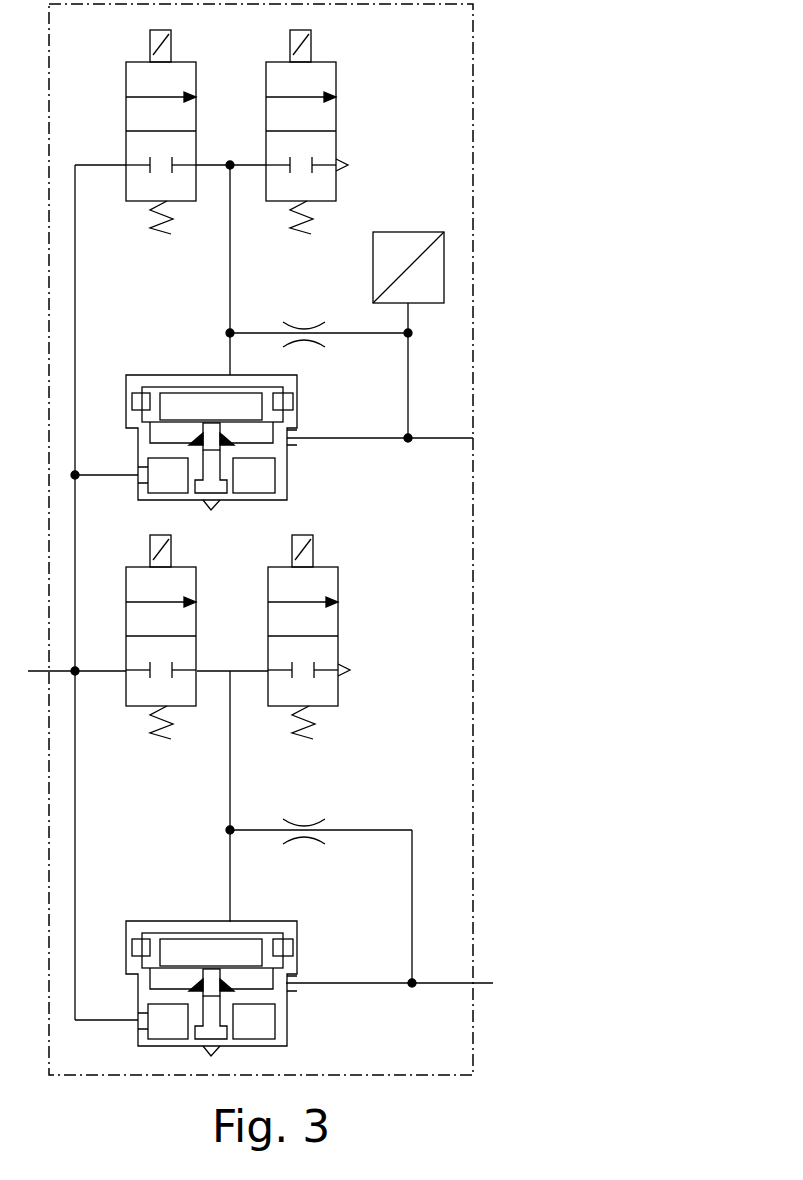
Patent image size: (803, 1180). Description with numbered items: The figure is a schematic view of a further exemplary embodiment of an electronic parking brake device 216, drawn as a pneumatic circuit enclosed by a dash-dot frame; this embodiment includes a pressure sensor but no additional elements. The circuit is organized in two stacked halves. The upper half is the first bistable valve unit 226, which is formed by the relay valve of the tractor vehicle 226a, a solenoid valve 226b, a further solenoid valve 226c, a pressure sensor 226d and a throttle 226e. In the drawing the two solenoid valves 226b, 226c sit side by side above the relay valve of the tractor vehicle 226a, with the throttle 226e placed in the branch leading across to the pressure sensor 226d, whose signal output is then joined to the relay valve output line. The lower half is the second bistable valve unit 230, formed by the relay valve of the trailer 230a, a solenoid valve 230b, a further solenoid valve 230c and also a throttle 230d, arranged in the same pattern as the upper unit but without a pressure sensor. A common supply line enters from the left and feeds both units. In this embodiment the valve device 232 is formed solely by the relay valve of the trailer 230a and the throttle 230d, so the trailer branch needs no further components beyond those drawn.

The electronic parking brake device 216 is at (534, 46).
The first bistable valve unit 226 is at (534, 152).
The second bistable valve unit 230 is at (534, 259).
The valve device 232 is at (534, 364).
The relay valve of the tractor vehicle 226a is at (172, 375).
The solenoid valve 226b is at (137, 87).
The further solenoid valve 226c is at (323, 80).
The pressure sensor 226d is at (408, 232).
The throttle 226e is at (307, 321).
The relay valve of the trailer 230a is at (171, 921).
The solenoid valve 230b is at (140, 698).
The further solenoid valve 230c is at (320, 580).
The throttle 230d is at (320, 822).